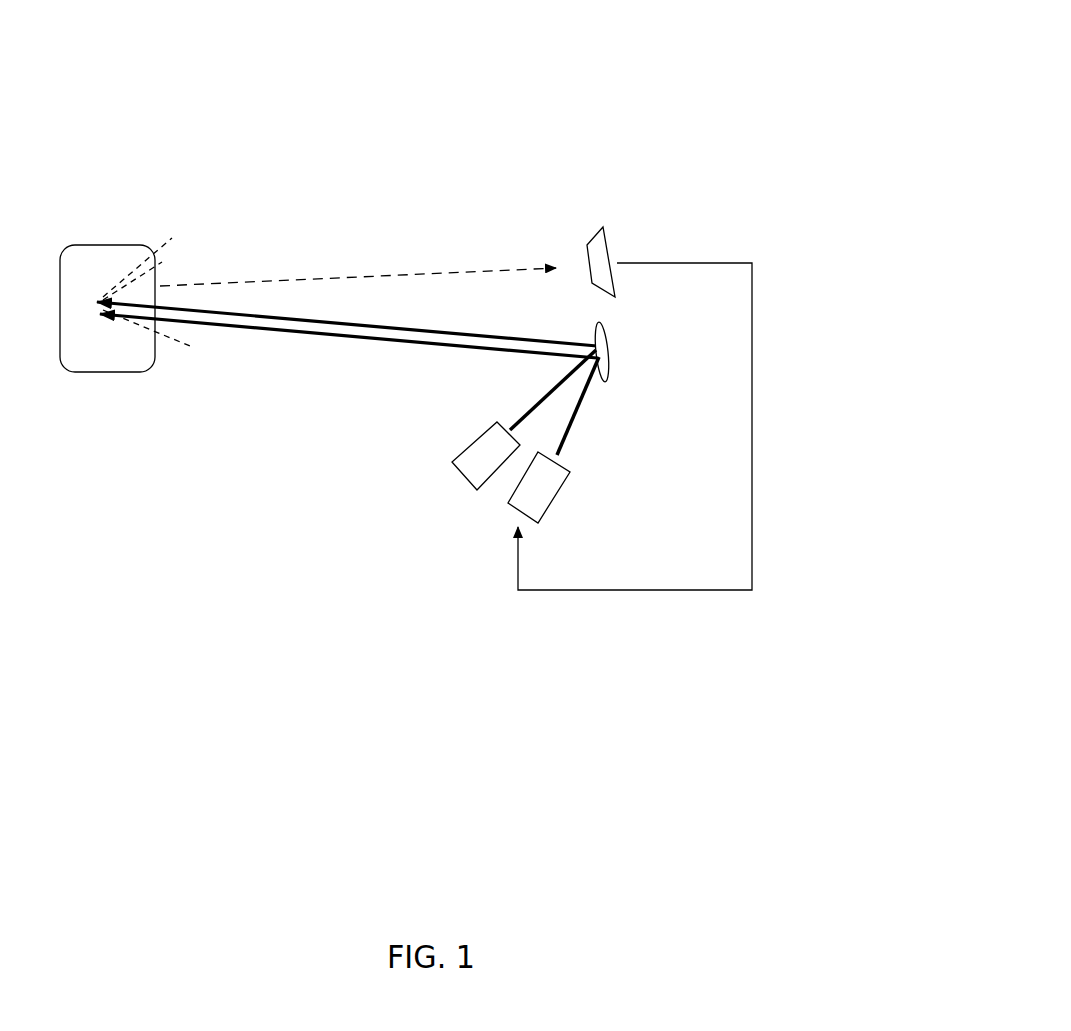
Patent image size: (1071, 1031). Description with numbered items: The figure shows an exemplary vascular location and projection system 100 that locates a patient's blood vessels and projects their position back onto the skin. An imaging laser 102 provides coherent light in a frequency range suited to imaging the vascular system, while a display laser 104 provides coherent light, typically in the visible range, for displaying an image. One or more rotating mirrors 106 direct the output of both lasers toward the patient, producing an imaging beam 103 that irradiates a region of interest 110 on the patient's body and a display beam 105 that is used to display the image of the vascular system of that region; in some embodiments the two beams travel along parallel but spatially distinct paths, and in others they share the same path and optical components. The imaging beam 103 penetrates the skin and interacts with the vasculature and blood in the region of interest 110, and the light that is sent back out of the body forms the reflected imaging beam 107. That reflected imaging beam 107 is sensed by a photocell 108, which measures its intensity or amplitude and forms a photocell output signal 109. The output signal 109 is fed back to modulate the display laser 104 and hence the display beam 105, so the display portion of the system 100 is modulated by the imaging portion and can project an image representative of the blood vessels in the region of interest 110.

The vascular location and projection system 100 is at (756, 116).
The imaging laser 102 is at (435, 462).
The imaging beam 103 is at (268, 310).
The display laser 104 is at (586, 487).
The display beam 105 is at (328, 339).
The rotating mirrors 106 is at (634, 322).
The reflected imaging beam 107 is at (205, 275).
The photocell 108 is at (575, 206).
The photocell output signal 109 is at (760, 382).
The region of interest (ROI) 110 is at (108, 349).